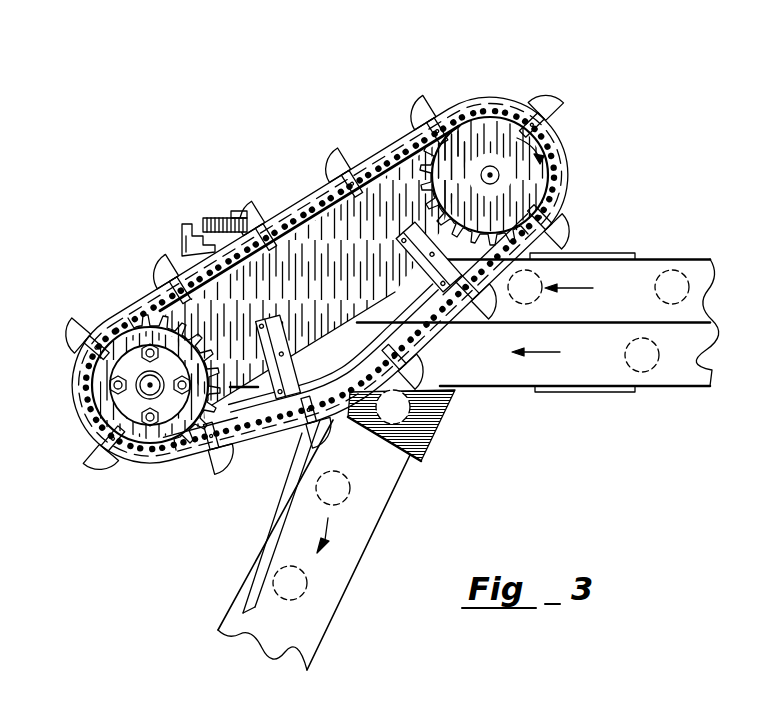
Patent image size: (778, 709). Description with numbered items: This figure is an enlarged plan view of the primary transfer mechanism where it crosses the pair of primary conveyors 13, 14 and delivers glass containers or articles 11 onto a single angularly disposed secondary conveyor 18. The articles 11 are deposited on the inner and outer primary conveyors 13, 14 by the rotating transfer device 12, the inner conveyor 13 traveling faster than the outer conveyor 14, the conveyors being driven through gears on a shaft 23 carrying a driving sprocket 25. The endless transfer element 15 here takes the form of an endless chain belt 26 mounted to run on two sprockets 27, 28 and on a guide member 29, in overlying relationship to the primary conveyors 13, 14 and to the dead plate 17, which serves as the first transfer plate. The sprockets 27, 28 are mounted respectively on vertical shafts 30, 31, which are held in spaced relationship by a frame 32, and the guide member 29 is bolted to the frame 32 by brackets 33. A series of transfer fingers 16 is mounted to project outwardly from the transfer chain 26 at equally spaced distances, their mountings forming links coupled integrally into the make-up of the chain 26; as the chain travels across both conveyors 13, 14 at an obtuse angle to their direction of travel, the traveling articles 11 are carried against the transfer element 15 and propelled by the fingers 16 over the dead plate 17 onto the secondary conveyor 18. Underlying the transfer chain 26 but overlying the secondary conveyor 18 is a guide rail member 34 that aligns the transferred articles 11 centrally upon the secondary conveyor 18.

The glass containers or articles 11 is at (668, 280).
The rotating transfer device 12 is at (650, 365).
The primary conveyor 13 is at (616, 372).
The primary conveyor 14 is at (630, 282).
The endless transfer element 15 is at (368, 128).
The transfer fingers 16 is at (560, 108).
The dead plate 17 is at (447, 440).
The secondary conveyor 18 is at (363, 521).
The shaft 23 is at (240, 210).
The driving sprocket 25 is at (213, 217).
The endless chain belt 26 is at (565, 162).
The sprocket 27 is at (474, 134).
The sprocket 28 is at (118, 340).
The guide member 29 is at (377, 362).
The vertical shaft 30 is at (491, 172).
The vertical shaft 31 is at (150, 385).
The frame 32 is at (323, 230).
The brackets 33 is at (289, 374).
The guide rail member 34 is at (283, 537).